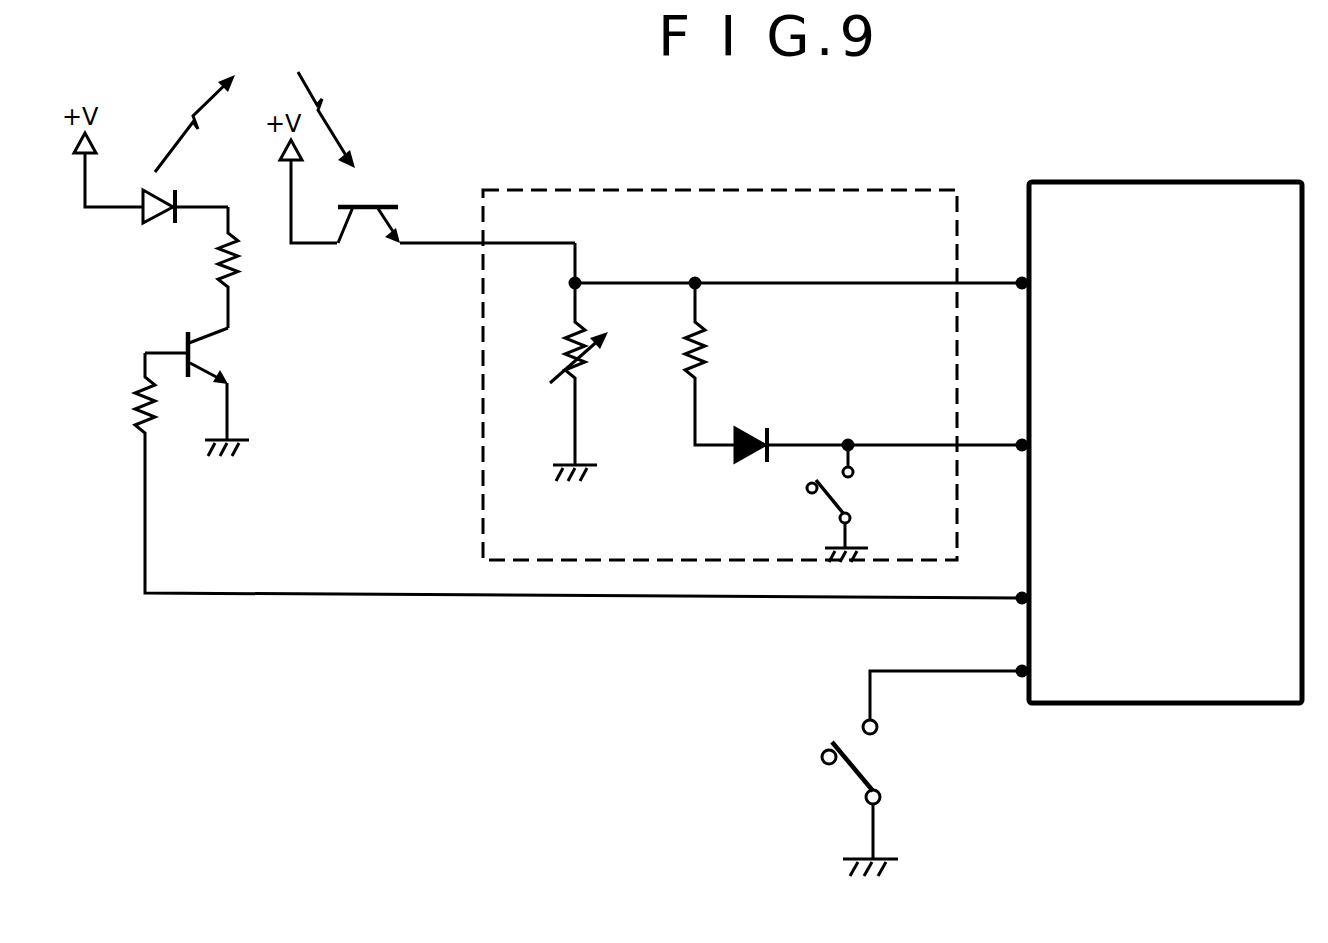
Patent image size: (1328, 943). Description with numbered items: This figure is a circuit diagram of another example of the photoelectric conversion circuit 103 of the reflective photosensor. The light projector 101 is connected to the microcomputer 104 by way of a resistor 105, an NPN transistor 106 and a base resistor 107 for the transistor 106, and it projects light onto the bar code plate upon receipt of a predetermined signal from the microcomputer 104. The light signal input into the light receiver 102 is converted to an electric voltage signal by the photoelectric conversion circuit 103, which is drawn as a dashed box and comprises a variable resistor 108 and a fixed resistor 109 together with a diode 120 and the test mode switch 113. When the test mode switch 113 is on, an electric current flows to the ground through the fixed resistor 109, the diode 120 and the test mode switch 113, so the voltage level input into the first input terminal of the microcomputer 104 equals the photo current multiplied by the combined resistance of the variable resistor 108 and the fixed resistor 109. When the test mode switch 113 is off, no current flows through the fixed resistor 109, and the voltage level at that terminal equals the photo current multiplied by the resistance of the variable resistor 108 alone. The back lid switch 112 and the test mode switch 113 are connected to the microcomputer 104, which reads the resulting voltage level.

The light projector 101 is at (152, 226).
The light receiver 102 is at (375, 205).
The photoelectric conversion circuit 103 is at (818, 188).
The microcomputer 104 is at (1190, 180).
The resistor 105 is at (242, 262).
The NPN transistor 106 is at (228, 358).
The base resistor 107 is at (136, 390).
The variable resistor 108 is at (592, 362).
The fixed resistor 109 is at (705, 352).
The back lid switch 112 is at (880, 758).
The test mode switch 113 is at (826, 503).
The diode 120 is at (730, 455).